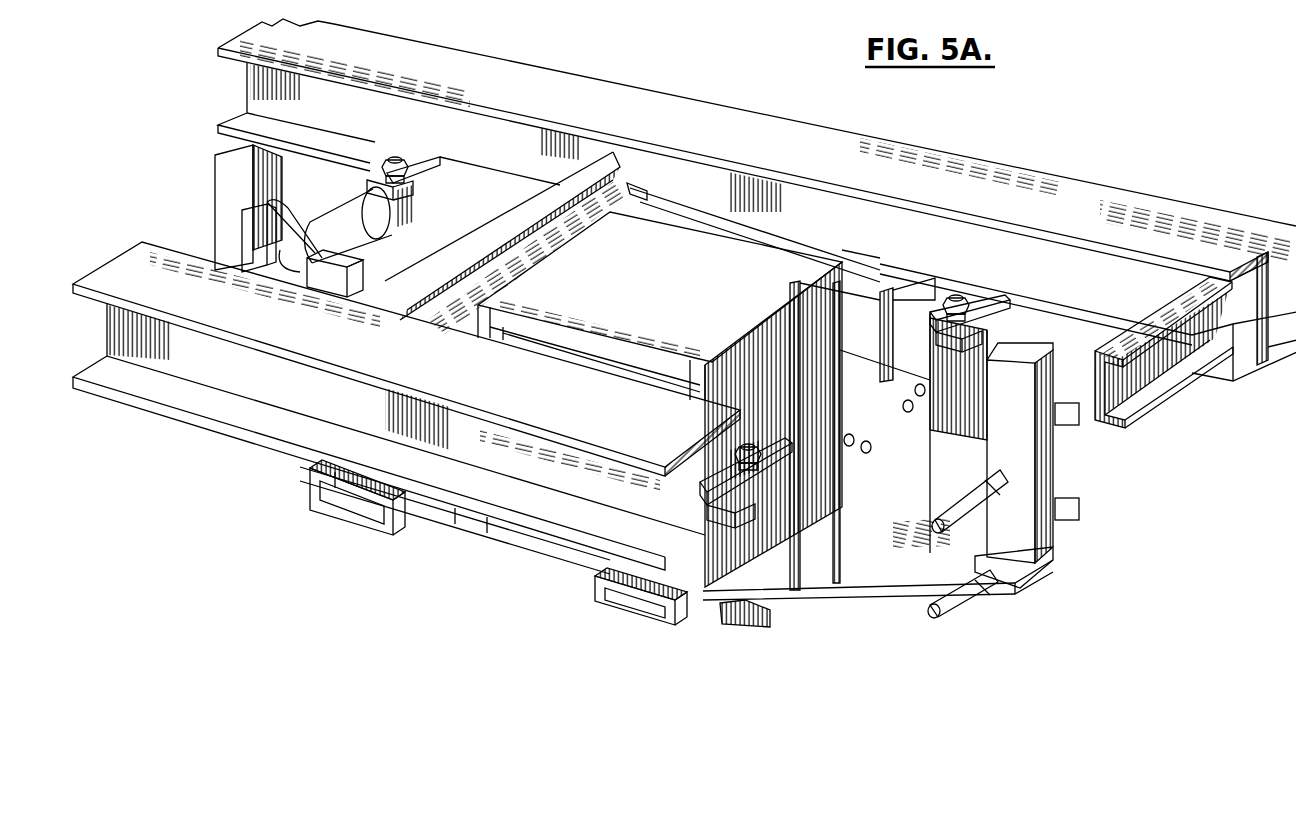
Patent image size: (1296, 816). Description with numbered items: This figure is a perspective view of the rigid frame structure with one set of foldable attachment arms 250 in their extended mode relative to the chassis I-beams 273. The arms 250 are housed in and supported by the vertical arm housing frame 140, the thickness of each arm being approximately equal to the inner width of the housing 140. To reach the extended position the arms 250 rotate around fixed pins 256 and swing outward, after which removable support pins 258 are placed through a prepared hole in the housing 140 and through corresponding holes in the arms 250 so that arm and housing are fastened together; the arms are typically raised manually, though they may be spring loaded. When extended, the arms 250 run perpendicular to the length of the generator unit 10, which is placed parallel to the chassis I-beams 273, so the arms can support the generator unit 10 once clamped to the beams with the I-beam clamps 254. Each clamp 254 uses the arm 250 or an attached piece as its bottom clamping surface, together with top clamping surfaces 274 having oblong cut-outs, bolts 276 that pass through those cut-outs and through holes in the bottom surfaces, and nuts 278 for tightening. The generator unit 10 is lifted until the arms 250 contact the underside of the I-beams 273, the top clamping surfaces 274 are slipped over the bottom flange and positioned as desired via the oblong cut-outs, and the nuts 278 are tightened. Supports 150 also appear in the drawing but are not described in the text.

The generator unit 10 is at (1020, 605).
The arm housing frame 140 is at (837, 540).
The support bracket 150 is at (352, 505).
The foldable attachment arms 250 is at (447, 197).
The I-beam clamps 254 is at (1022, 297).
The fixed pins 256 is at (908, 412).
The removable support pins 258 is at (851, 446).
The chassis I-beams 273 is at (1150, 192).
The top clamping surfaces 274 is at (415, 170).
The bolts 276 is at (392, 157).
The nuts 278 is at (398, 158).